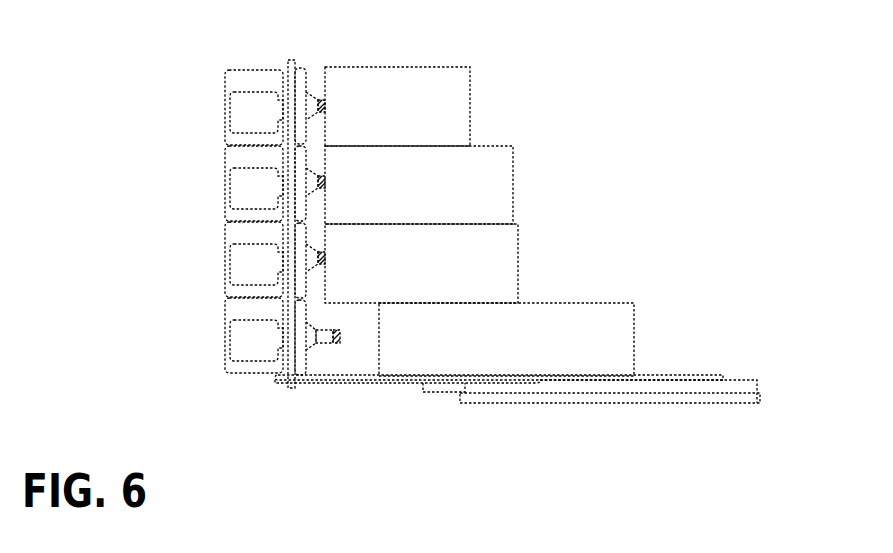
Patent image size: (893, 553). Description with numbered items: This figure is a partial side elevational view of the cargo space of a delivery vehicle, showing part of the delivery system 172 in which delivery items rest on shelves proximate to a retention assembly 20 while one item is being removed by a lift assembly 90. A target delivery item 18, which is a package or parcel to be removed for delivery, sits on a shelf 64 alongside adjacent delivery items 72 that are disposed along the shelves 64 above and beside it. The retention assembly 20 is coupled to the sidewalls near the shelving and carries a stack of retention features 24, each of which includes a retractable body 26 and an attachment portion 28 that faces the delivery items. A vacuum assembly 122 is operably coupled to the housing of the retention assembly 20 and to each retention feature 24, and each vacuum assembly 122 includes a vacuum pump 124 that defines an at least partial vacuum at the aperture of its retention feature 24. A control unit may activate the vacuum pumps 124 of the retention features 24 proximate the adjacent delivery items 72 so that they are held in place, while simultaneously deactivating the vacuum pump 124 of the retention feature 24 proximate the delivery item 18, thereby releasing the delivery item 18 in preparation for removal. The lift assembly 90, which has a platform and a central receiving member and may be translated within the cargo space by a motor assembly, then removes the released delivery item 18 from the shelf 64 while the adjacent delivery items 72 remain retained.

The delivery item 18 is at (608, 335).
The retention assembly 20 is at (265, 383).
The retention feature 24 is at (310, 95).
The retractable body 26 is at (333, 344).
The attachment portion 28 is at (340, 336).
The shelf 64 is at (446, 385).
The adjacent delivery items 72 is at (455, 100).
The lift assembly 90 is at (662, 407).
The vacuum assembly 122 is at (225, 83).
The vacuum pump 124 is at (243, 113).
The delivery system 172 is at (662, 65).